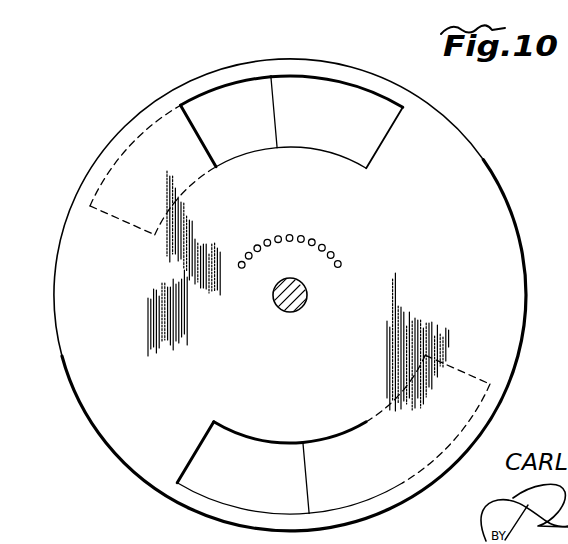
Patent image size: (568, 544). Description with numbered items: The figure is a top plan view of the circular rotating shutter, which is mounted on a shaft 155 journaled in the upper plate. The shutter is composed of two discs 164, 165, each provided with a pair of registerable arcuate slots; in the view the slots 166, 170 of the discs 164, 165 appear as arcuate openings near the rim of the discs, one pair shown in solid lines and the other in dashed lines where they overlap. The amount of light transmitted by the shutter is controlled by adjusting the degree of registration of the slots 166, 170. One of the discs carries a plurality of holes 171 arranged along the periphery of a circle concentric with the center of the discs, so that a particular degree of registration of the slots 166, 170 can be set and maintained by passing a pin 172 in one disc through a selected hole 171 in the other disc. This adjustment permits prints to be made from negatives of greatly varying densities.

The shaft 155 is at (306, 289).
The disc 164 is at (322, 90).
The disc 165 is at (75, 345).
The slots 166 is at (237, 97).
The slots 170 is at (360, 141).
The holes 171 is at (326, 222).
The pin 172 is at (278, 241).